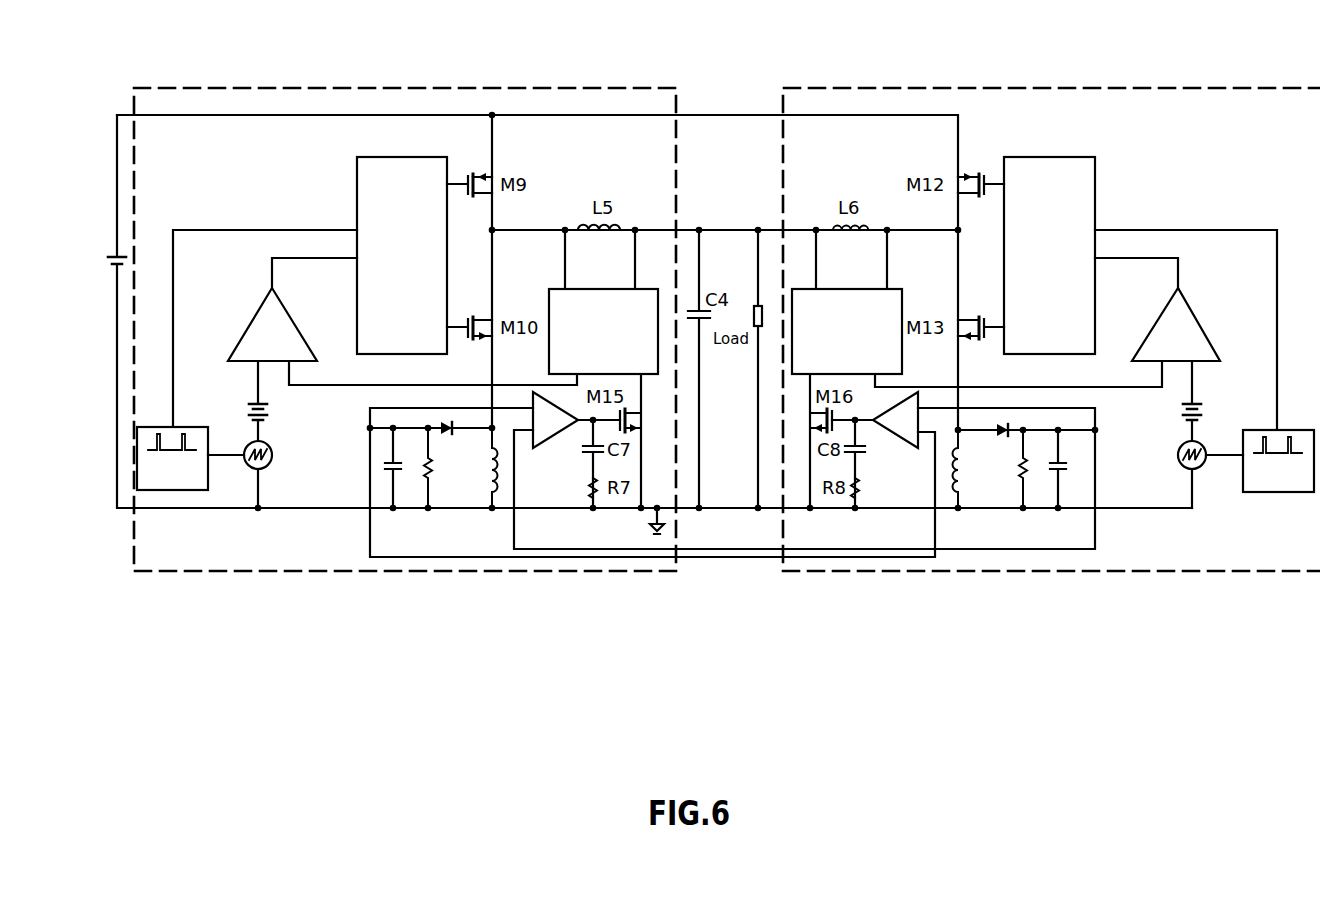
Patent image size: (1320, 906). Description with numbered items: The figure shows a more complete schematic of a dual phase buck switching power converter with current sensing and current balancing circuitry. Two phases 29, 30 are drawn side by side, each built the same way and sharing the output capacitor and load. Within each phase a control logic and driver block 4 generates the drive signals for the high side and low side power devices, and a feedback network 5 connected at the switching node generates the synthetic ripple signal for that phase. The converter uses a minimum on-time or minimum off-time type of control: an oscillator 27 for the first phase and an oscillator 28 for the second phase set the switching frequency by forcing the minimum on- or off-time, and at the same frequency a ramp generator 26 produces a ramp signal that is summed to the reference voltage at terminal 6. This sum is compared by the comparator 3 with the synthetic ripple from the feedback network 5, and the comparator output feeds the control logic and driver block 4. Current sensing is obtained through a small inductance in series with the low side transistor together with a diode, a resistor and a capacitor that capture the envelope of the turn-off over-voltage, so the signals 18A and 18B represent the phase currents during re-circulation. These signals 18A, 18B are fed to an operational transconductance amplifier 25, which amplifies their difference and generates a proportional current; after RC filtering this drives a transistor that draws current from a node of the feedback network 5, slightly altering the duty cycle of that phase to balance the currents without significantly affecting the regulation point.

The comparator 3 is at (247, 330).
The control logic and driver block 4 is at (357, 170).
The feedback network 5 is at (579, 289).
The reference voltage terminal 6 is at (252, 404).
The current sense signal of first phase 18A is at (370, 409).
The current sense signal of second phase 18B is at (1095, 417).
The operational transconductance amplifier 25 is at (561, 436).
The ramp signal generator 26 is at (272, 452).
The first oscillator 27 is at (163, 427).
The second oscillator 28 is at (1293, 406).
The first phase 29 is at (320, 87).
The second phase 30 is at (915, 87).